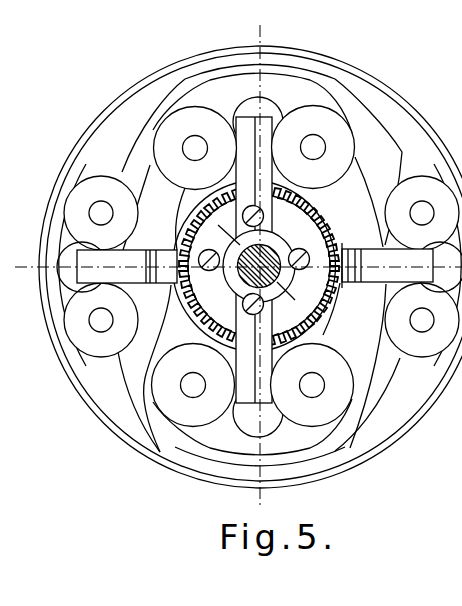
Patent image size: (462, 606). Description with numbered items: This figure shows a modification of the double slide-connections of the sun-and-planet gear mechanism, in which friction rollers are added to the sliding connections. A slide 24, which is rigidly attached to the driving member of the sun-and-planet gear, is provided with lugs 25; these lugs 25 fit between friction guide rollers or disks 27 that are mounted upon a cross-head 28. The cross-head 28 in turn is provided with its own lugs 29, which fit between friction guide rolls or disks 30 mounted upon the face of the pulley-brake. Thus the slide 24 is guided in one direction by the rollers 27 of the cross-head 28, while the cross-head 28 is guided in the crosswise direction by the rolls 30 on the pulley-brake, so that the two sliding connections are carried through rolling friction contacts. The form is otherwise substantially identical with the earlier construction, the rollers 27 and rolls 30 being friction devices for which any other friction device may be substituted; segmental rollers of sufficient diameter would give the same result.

The slide 24 is at (254, 260).
The lugs 25 is at (254, 267).
The friction guide rollers or disks 27 is at (253, 266).
The cross-head 28 is at (260, 264).
The lugs 29 is at (259, 267).
The friction guide rolls or disks 30 is at (261, 266).